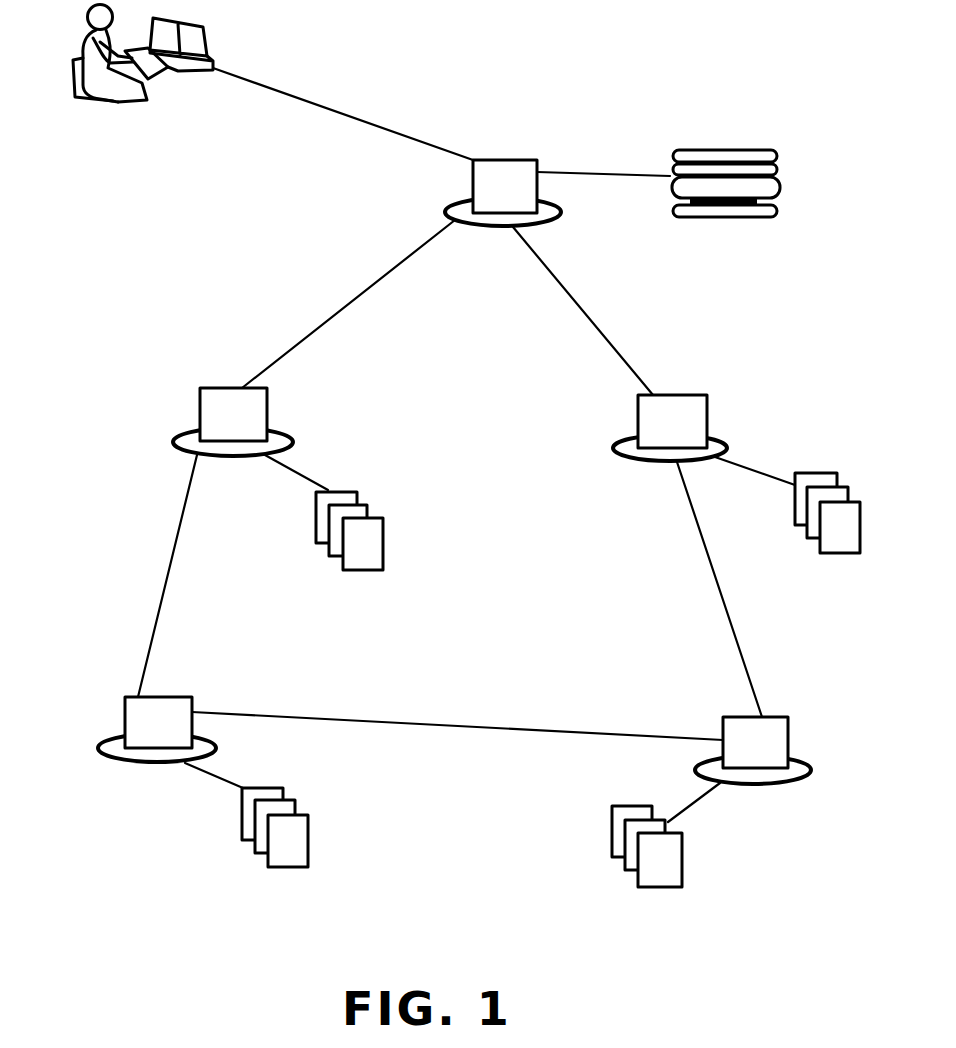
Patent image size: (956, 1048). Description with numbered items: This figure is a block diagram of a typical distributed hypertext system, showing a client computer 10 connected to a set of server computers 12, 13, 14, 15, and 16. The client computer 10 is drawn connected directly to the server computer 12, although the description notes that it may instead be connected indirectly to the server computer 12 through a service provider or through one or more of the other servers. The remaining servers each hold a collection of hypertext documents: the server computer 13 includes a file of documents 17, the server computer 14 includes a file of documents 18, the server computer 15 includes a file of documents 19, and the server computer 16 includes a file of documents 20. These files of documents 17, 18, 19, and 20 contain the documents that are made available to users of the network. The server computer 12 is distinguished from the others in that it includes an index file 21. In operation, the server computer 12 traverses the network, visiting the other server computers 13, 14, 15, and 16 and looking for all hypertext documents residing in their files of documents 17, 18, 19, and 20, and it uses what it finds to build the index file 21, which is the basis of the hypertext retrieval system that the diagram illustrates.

The client computer 10 is at (158, 72).
The server computer 12 is at (492, 160).
The server computer 13 is at (200, 402).
The server computer 14 is at (125, 712).
The server computer 15 is at (788, 735).
The server computer 16 is at (695, 395).
The file of documents 17 is at (370, 512).
The file of documents 18 is at (310, 835).
The file of documents 19 is at (613, 820).
The file of documents 20 is at (850, 487).
The index file 21 is at (723, 152).